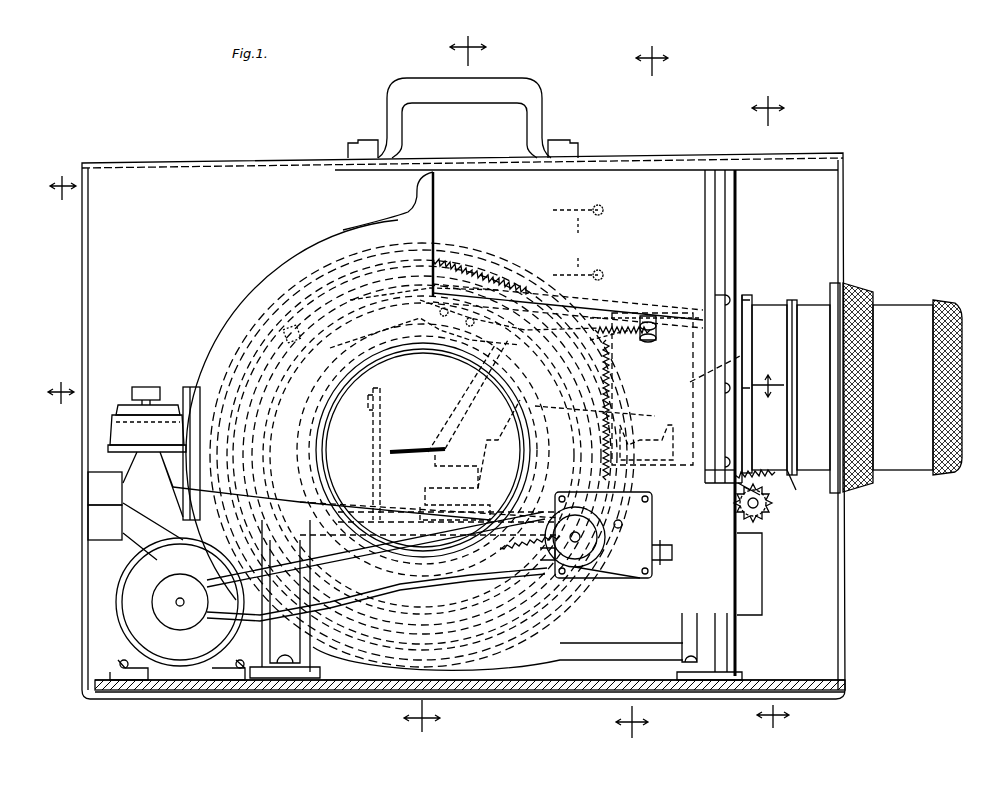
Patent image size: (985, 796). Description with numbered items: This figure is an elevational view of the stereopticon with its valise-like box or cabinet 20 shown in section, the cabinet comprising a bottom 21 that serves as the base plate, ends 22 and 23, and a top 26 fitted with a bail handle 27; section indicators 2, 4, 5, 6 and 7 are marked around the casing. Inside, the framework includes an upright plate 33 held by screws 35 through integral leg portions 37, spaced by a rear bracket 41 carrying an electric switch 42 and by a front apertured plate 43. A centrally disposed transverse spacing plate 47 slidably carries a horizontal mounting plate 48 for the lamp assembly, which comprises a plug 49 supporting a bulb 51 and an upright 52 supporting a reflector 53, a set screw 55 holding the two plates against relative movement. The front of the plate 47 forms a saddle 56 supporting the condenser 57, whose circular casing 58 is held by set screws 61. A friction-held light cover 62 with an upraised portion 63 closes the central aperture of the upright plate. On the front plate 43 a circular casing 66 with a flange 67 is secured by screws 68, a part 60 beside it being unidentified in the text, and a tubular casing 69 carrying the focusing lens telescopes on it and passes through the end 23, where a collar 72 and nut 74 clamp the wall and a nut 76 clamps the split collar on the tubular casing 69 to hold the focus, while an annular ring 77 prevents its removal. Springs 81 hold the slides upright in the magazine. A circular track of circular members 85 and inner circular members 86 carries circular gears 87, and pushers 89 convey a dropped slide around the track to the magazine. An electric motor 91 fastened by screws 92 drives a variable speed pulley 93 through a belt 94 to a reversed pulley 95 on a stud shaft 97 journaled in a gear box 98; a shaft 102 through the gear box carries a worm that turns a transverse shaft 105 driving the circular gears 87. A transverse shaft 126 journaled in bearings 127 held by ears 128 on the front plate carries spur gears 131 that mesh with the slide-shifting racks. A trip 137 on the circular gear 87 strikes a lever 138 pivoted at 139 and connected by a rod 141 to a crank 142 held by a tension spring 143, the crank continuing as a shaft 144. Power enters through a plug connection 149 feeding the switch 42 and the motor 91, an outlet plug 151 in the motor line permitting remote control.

The section line 2- 2 is at (58, 188).
The section line 4- 4 is at (411, 389).
The section line 5- 5 is at (770, 411).
The section line 6- 6 is at (642, 391).
The section line 7- 7 is at (445, 384).
The box or cabinet 20 is at (818, 156).
The bottom 21 is at (232, 690).
The end 22 is at (82, 256).
The end 23 is at (845, 252).
The top 26 is at (676, 157).
The bail handle 27 is at (514, 86).
The upright plate 33 is at (270, 276).
The screws 35 is at (285, 668).
The leg portions 37 is at (262, 648).
The rear bracket 41 is at (188, 386).
The electric switch 42 is at (126, 398).
The front apertured plate 43 is at (736, 232).
The transverse spacing plate 47 is at (505, 548).
The horizontal mounting plate 48 is at (372, 514).
The plug 49 is at (482, 494).
The bulb 51 is at (498, 412).
The upright 52 is at (372, 425).
The reflector 53 is at (380, 440).
The set screw 55 is at (408, 510).
The saddle 56 is at (636, 440).
The condenser 57 is at (742, 360).
The circular casing 58 is at (682, 310).
The lens barrel flange 60 is at (774, 371).
The set screws 61 is at (656, 334).
The light cover 62 is at (338, 417).
The upraised portion 63 is at (405, 455).
The circular casing 66 is at (752, 312).
The flange 67 is at (740, 292).
The screws 68 is at (746, 296).
The tubular casing 69 is at (905, 305).
The collar 72 is at (834, 285).
The nut 74 is at (848, 290).
The nut 76 is at (868, 300).
The annular ring 77 is at (799, 484).
The springs 81 is at (578, 242).
The circular members 85 is at (240, 350).
The inner circular members 86 is at (296, 366).
The circular gears 87 is at (318, 280).
The pushers 89 is at (316, 344).
The electric motor 91 is at (128, 578).
The screws 92 is at (138, 675).
The variable speed drive pulley 93 is at (180, 580).
The belt 94 is at (390, 590).
The pulley 95 is at (605, 548).
The stud shaft 97 is at (581, 537).
The gear box 98 is at (618, 578).
The shaft 102 is at (672, 555).
The transverse shaft 105 is at (630, 516).
The transverse shaft 126 is at (758, 514).
The bearings 127 is at (768, 512).
The ears 128 is at (748, 468).
The spur gears 131 is at (775, 503).
The trip 137 is at (300, 490).
The lever 138 is at (395, 305).
The pivot 139 is at (432, 316).
The rod 141 is at (480, 336).
The crank 142 is at (630, 316).
The tension spring 143 is at (622, 342).
The shaft 144 is at (598, 312).
The plug connection 149 is at (98, 474).
The outlet plug 151 is at (98, 522).